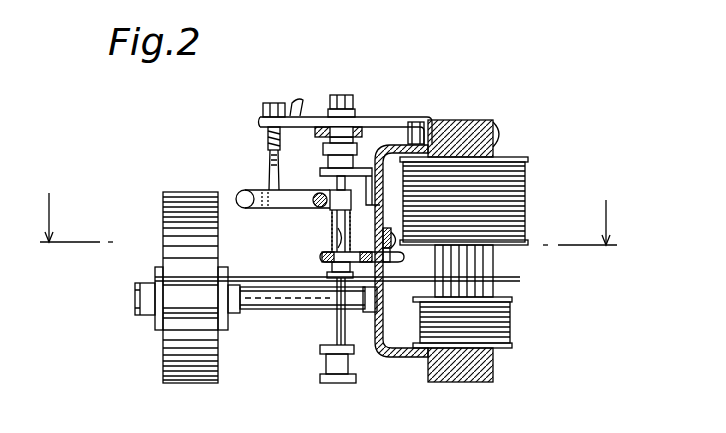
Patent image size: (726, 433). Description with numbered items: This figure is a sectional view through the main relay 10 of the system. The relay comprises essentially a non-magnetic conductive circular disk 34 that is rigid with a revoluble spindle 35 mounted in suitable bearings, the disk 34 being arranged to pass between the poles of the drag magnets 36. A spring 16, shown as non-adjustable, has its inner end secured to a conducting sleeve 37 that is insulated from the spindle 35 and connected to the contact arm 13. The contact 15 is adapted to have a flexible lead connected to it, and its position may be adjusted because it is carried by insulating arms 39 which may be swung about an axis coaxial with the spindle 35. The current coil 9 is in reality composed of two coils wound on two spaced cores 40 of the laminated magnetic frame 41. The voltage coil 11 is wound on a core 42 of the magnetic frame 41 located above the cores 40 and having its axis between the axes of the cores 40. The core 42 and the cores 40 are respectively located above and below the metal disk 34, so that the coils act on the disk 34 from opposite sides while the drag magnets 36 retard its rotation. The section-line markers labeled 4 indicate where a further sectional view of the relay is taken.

The section line 4- 4 is at (328, 231).
The current coil 9 is at (512, 323).
The main relay 10 is at (550, 192).
The voltage coil 11 is at (528, 206).
The contact arm 13 is at (258, 191).
The contact 15 is at (253, 210).
The spring 16 is at (320, 256).
The non-magnetic conductive circular disk 34 is at (522, 280).
The revoluble spindle 35 is at (337, 322).
The drag magnets 36 is at (163, 199).
The conducting sleeve 37 is at (332, 216).
The insulating arms 39 is at (262, 121).
The cores 40 is at (438, 293).
The laminated magnetic frame 41 is at (478, 120).
The core 42 is at (488, 258).